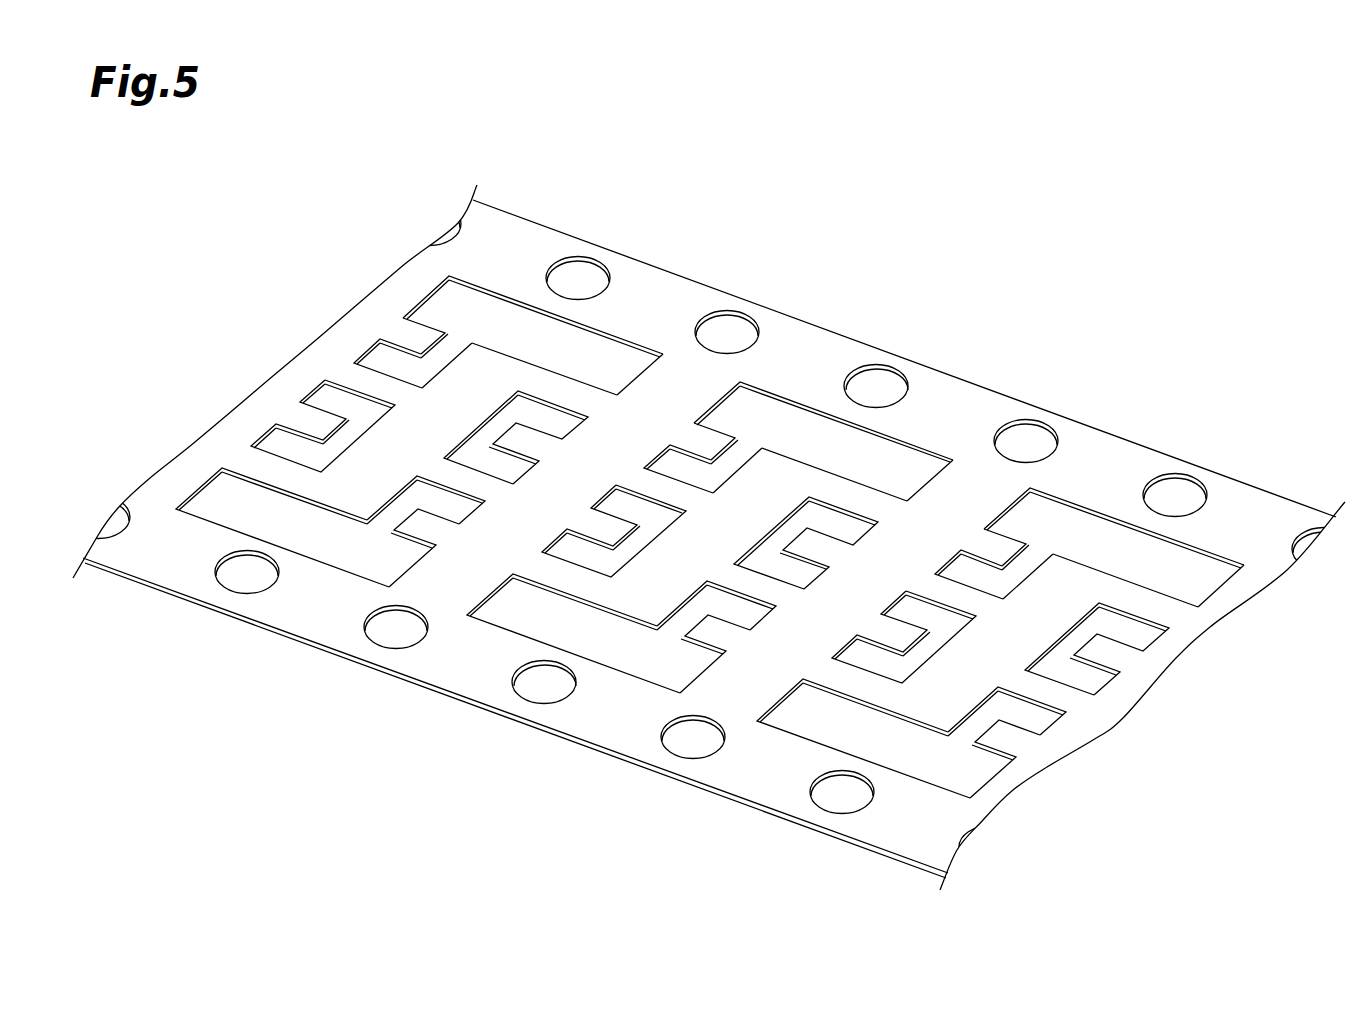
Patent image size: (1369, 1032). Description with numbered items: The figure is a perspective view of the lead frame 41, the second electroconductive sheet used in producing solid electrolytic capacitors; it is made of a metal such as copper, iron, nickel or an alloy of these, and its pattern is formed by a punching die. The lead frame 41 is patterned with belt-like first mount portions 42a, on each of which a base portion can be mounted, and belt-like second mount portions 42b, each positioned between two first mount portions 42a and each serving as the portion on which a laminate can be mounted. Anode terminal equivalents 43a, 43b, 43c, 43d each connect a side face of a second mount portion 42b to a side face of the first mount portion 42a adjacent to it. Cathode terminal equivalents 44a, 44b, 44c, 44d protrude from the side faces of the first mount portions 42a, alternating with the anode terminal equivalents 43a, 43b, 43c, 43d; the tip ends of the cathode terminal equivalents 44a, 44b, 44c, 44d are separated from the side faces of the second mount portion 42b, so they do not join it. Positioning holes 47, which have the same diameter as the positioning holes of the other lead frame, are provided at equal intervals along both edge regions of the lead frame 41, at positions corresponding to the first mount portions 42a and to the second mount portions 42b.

The lead frame 41 is at (234, 245).
The positioning holes 47 is at (593, 287).
The first mount portions 42a is at (658, 386).
The second mount portions 42b is at (488, 385).
The anode terminal equivalent 43a is at (267, 470).
The anode terminal equivalent 43b is at (383, 390).
The anode terminal equivalent 43c is at (460, 482).
The anode terminal equivalent 43d is at (568, 390).
The cathode terminal equivalent 44a is at (321, 435).
The cathode terminal equivalent 44b is at (428, 333).
The cathode terminal equivalent 44c is at (427, 527).
The cathode terminal equivalent 44d is at (522, 437).